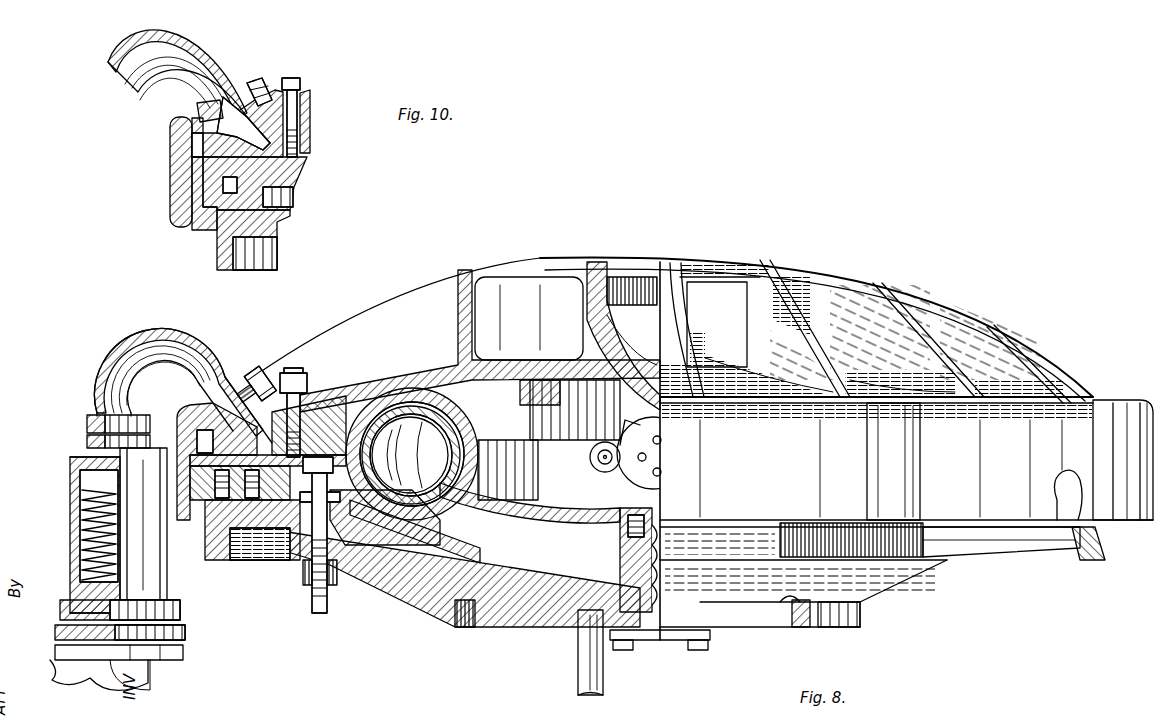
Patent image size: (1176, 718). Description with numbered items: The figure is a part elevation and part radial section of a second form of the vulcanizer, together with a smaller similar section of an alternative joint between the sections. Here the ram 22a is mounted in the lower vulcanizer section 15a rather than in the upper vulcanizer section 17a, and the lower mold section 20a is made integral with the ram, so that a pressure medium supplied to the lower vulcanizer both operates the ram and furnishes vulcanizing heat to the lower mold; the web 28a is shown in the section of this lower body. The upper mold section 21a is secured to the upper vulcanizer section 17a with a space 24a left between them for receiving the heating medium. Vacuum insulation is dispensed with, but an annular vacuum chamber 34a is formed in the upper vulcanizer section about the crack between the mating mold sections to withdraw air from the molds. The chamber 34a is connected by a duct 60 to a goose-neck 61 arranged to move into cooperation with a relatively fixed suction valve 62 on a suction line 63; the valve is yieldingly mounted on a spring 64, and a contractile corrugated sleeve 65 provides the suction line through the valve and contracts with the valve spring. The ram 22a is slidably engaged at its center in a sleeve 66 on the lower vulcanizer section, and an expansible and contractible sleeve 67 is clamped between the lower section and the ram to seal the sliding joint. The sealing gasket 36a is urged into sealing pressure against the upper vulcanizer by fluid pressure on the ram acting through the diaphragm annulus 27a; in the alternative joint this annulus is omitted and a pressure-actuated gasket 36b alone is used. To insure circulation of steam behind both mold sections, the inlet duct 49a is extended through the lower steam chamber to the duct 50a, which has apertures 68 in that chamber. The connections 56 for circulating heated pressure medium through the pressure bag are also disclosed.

In FIG. 10, the goose-neck 61 is at (222, 50).
In FIG. 8, the goose-neck 61 is at (170, 340).
In FIG. 10, the duct 60 is at (243, 130).
In FIG. 8, the duct 60 is at (262, 372).
In FIG. 8, the sealing gasket 36a is at (195, 442).
In FIG. 10, the pressure-actuated gasket 36b is at (192, 172).
In FIG. 8, the annular vacuum chamber 34a is at (300, 420).
In FIG. 8, the space 24a is at (338, 405).
In FIG. 10, the upper vulcanizer section 17a is at (312, 101).
In FIG. 8, the upper vulcanizer section 17a is at (380, 380).
In FIG. 10, the mold section 21a is at (300, 170).
In FIG. 8, the mold section 21a is at (418, 390).
In FIG. 8, the connections 56 is at (650, 465).
In FIG. 8, the spring 64 is at (78, 515).
In FIG. 8, the contractile corrugated sleeve 65 is at (76, 551).
In FIG. 8, the suction valve 62 is at (115, 612).
In FIG. 8, the suction line 63 is at (150, 660).
In FIG. 8, the diaphragm annulus 27a is at (215, 520).
In FIG. 8, the inlet duct 49a is at (303, 568).
In FIG. 8, the duct 50a is at (313, 507).
In FIG. 8, the apertures 68 is at (325, 476).
In FIG. 8, the mold section 20a is at (357, 548).
In FIG. 8, the web 28a is at (405, 540).
In FIG. 8, the ram 22a is at (570, 522).
In FIG. 8, the sleeve 66 is at (620, 553).
In FIG. 10, the lower vulcanizer section 15a is at (222, 240).
In FIG. 8, the lower vulcanizer section 15a is at (470, 605).
In FIG. 8, the expansible and contractible sleeve 67 is at (650, 612).